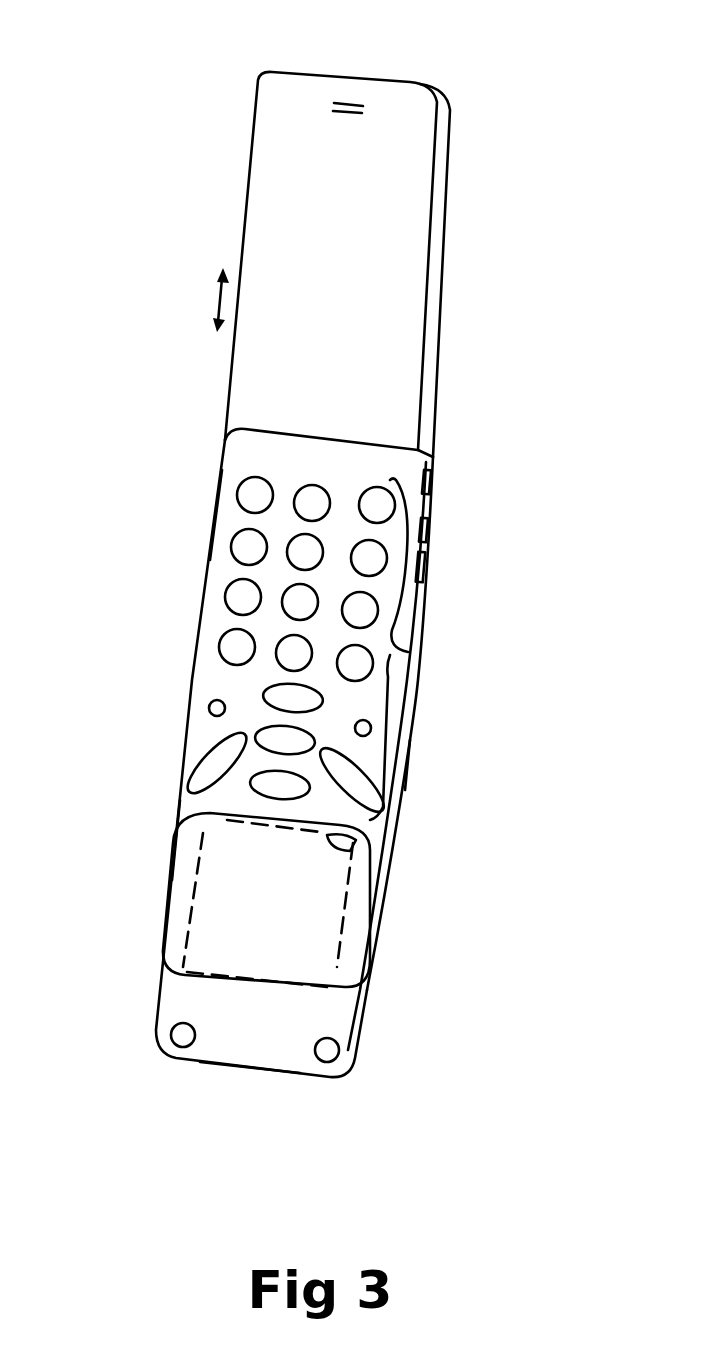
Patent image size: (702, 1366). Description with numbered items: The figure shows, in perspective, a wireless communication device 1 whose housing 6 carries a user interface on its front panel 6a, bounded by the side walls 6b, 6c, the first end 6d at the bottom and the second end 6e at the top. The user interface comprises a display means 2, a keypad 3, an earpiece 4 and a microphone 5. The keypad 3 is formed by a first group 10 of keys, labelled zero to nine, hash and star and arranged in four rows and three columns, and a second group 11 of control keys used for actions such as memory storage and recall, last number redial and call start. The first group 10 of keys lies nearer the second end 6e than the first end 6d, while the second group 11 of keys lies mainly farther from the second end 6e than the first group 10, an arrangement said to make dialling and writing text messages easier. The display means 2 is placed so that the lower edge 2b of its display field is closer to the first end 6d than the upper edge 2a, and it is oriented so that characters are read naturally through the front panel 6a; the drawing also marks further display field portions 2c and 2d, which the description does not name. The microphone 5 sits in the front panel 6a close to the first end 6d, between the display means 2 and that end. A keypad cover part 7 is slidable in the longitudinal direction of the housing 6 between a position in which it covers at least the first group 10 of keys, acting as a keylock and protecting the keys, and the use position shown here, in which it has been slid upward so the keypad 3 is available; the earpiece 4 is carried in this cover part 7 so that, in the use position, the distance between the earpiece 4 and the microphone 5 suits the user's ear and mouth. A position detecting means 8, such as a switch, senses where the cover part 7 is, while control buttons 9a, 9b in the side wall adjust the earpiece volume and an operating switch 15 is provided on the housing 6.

The wireless communication device 1 is at (520, 784).
The display means 2 is at (328, 1001).
The upper edge of the display field 2a is at (352, 850).
The lower edge of the display field 2b is at (322, 989).
The display left region 2c is at (182, 937).
The display right region 2d is at (338, 957).
The keypad 3 is at (408, 652).
The earpiece 4 is at (343, 103).
The microphone 5 is at (330, 1062).
The housing 6 is at (157, 999).
The front panel 6a is at (204, 657).
The side wall 6b is at (157, 836).
The side wall 6c is at (407, 762).
The first end of the housing 6d is at (243, 1086).
The second end of the housing 6e is at (442, 414).
The cover part 7 is at (413, 83).
The position detecting means 8 is at (438, 480).
The control button 9a is at (430, 541).
The control button 9b is at (428, 580).
The first group of keys 10 is at (362, 503).
The second group of keys 11 is at (275, 740).
The operating switch 15 is at (176, 1044).